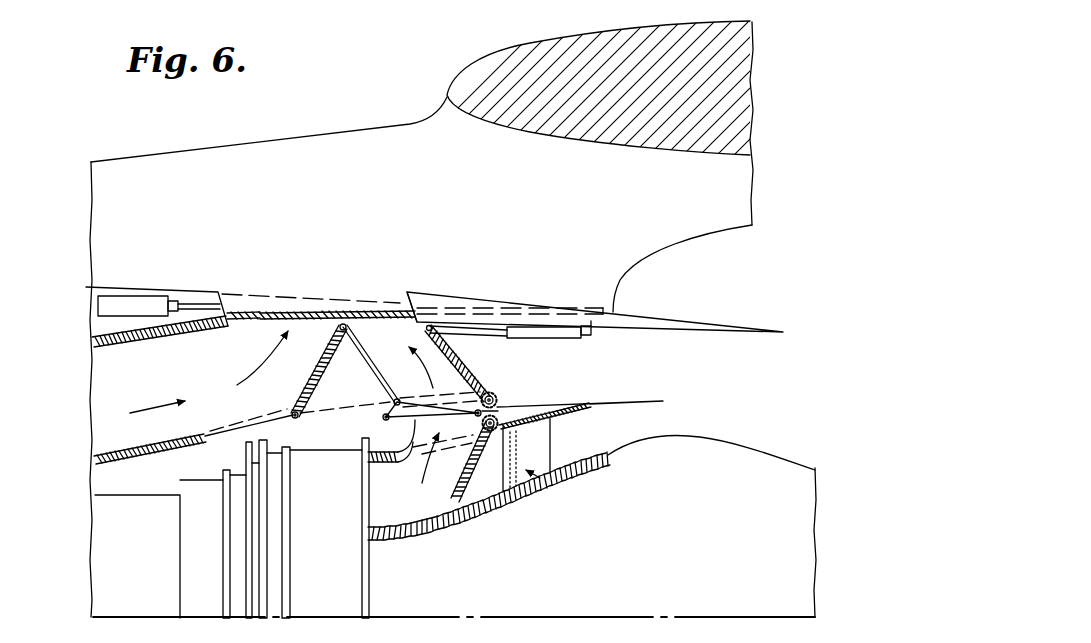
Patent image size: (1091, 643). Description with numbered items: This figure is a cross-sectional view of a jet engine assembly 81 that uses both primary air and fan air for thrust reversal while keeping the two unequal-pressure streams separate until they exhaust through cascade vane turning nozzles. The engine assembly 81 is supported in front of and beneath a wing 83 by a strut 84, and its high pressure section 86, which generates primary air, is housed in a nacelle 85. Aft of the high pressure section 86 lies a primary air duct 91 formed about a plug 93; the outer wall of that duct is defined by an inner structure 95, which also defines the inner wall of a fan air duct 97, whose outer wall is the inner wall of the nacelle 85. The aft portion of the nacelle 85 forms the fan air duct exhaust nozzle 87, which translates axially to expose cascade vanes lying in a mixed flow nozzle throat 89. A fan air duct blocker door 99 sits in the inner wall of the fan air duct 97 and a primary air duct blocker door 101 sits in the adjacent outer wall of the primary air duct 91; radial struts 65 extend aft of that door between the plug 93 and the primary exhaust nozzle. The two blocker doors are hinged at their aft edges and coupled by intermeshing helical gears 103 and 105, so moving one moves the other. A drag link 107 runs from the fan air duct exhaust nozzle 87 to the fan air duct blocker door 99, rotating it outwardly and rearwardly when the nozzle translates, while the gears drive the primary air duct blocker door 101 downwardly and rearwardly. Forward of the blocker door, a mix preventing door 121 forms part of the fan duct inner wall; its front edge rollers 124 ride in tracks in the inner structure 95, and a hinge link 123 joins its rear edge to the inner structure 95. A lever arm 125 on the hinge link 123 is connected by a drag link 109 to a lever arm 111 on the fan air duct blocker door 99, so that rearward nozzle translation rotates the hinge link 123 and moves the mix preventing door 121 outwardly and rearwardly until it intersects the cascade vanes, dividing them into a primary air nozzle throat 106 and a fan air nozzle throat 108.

The radial struts 65 is at (548, 480).
The jet engine assembly 81 is at (690, 282).
The wing 83 is at (517, 61).
The strut 84 is at (327, 148).
The nacelle 85 is at (123, 287).
The high pressure section 86 is at (118, 537).
The fan air duct exhaust nozzle 87 is at (713, 328).
The mixed flow nozzle throat 89 is at (322, 312).
The primary air duct 91 is at (410, 512).
The plug 93 is at (776, 467).
The inner structure 95 is at (355, 443).
The fan air duct 97 is at (212, 367).
The fan air duct blocker door 99 is at (475, 367).
The primary air duct blocker door 101 is at (475, 490).
The intermeshing helical gear 103 is at (495, 396).
The intermeshing helical gear 105 is at (500, 407).
The primary air nozzle throat 106 is at (372, 308).
The drag link 107 is at (538, 328).
The fan air nozzle throat 108 is at (257, 312).
The drag link 109 is at (402, 409).
The lever arm 111 is at (475, 398).
The mix preventing door 121 is at (305, 379).
The hinge link 123 is at (362, 342).
The front edge rollers 124 is at (290, 412).
The lever arm 125 is at (388, 413).